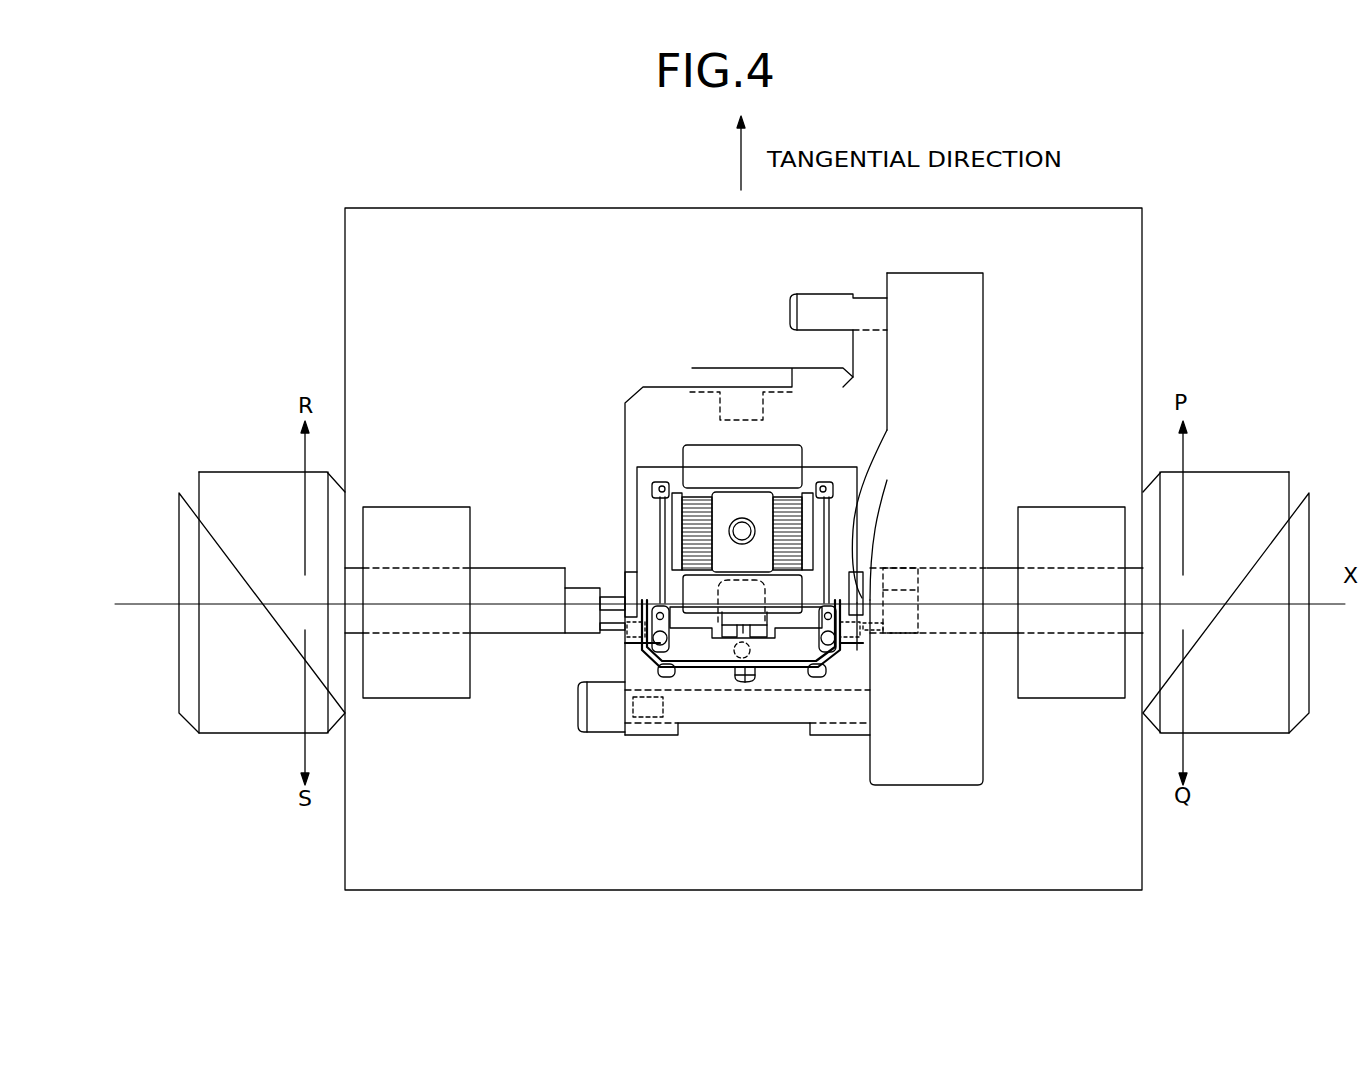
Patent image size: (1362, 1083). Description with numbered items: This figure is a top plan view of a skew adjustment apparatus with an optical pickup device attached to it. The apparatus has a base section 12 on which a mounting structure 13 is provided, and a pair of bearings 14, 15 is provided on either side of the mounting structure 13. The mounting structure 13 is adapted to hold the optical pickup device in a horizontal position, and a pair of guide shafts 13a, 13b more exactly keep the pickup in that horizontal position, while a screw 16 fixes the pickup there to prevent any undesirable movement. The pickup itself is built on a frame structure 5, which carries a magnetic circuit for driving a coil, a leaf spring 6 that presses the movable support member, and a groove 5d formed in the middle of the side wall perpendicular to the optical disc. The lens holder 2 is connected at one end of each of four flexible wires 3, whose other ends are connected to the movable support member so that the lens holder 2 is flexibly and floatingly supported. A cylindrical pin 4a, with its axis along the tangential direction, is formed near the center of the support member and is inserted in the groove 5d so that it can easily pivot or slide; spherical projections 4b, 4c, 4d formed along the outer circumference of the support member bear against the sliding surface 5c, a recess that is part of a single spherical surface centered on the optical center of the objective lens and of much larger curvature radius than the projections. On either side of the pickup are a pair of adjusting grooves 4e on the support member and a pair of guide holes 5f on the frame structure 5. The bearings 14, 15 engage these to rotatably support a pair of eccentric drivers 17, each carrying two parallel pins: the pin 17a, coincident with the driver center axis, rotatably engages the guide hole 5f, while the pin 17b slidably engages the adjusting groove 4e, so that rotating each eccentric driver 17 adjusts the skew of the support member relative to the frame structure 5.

The lens holder 2 is at (672, 495).
The flexible wire 3 is at (658, 510).
The cylindrical pin 4a is at (748, 668).
The spherical projection 4b is at (822, 672).
The spherical projection 4c is at (660, 672).
The spherical projection 4d is at (738, 652).
The adjusting groove 4e is at (625, 643).
The frame structure 5 is at (668, 384).
The sliding surface 5c is at (835, 690).
The groove 5d is at (757, 637).
The guide hole 5f is at (632, 597).
The leaf spring 6 is at (768, 640).
The base section 12 is at (1128, 266).
The mounting structure 13 is at (975, 315).
The guide shaft 13a is at (712, 737).
The guide shaft 13b is at (822, 297).
The bearing 14 is at (1062, 522).
The bearing 15 is at (412, 522).
The screw 16 is at (593, 733).
The eccentric driver 17 is at (232, 492).
The cylindrical pin 17a is at (618, 592).
The cylindrical pin 17b is at (608, 635).